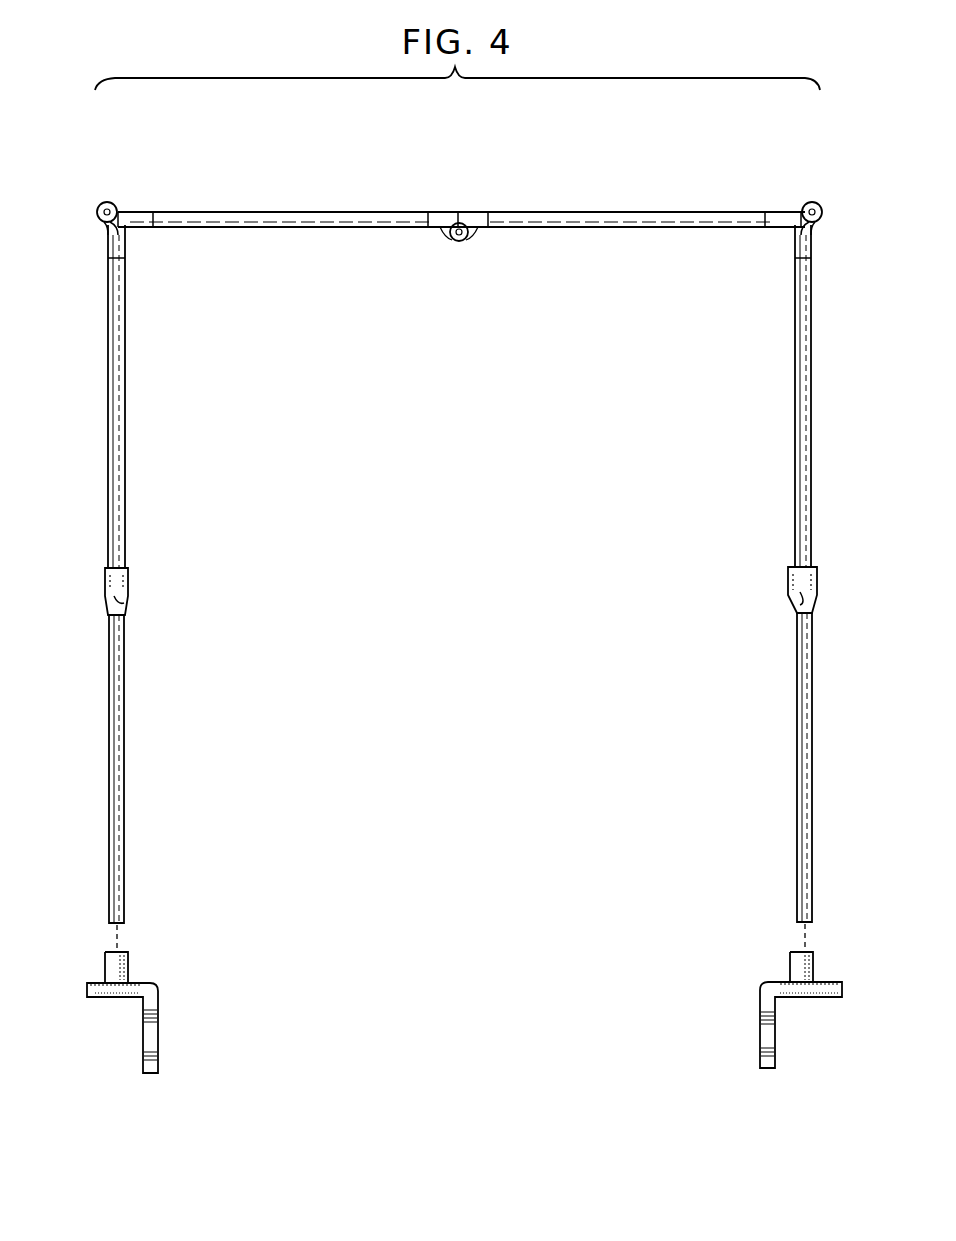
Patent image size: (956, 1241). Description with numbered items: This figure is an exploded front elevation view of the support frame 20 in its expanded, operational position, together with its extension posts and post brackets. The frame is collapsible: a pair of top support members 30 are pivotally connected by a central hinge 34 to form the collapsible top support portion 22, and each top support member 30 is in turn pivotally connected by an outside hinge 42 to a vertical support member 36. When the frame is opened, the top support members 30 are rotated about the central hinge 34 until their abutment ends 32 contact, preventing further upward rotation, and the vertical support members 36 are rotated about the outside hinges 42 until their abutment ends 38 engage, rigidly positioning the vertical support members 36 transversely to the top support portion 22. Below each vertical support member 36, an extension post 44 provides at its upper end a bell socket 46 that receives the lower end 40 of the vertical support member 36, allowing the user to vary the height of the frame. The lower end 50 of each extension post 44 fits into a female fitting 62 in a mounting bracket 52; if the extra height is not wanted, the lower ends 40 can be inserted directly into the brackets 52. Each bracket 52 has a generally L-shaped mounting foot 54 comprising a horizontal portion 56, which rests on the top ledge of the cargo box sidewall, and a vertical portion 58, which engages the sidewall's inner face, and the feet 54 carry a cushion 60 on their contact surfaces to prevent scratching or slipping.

The support frame 20 is at (413, 157).
The top support portion 22 is at (582, 210).
The top support member 30 is at (270, 210).
The abutment end 32 is at (443, 218).
The central hinge 34 is at (462, 241).
The vertical support member 36 is at (120, 432).
The abutment end 38 is at (140, 222).
The lower end 40 is at (125, 604).
The outside hinge 42 is at (110, 205).
The extension post 44 is at (122, 765).
The bell socket 46 is at (105, 578).
The lower end 50 is at (125, 925).
The mounting bracket 52 is at (160, 987).
The mounting foot 54 is at (160, 1025).
The horizontal portion 56 is at (95, 983).
The vertical portion 58 is at (158, 1062).
The cushion 60 is at (110, 998).
The female fitting 62 is at (120, 965).